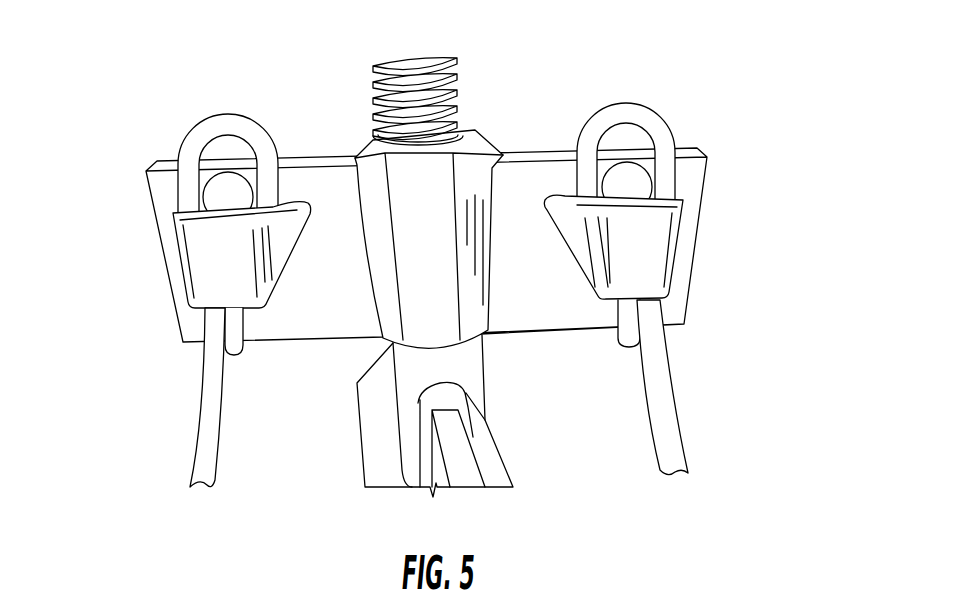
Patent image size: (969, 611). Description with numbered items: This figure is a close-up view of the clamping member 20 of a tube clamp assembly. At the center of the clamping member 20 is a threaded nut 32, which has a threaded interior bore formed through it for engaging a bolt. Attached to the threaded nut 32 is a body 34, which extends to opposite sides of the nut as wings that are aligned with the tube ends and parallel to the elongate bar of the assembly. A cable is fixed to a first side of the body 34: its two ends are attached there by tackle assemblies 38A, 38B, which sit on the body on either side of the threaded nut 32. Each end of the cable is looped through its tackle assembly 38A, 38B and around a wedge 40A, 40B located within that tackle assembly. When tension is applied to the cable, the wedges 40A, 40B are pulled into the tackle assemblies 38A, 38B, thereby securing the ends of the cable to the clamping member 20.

The clamping member 20 is at (438, 250).
The threaded nut 32 is at (482, 142).
The body 34 is at (310, 172).
The tackle assembly 38A is at (193, 257).
The tackle assembly 38B is at (673, 250).
The wedge 40A is at (220, 192).
The wedge 40B is at (643, 188).